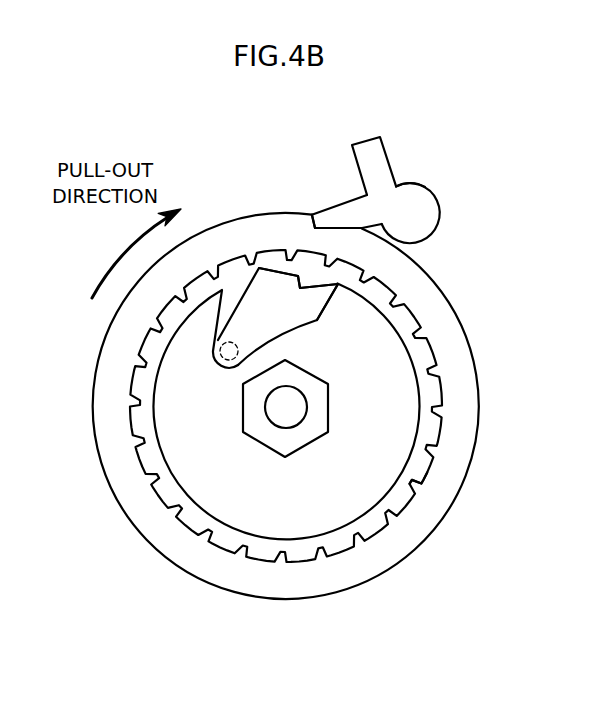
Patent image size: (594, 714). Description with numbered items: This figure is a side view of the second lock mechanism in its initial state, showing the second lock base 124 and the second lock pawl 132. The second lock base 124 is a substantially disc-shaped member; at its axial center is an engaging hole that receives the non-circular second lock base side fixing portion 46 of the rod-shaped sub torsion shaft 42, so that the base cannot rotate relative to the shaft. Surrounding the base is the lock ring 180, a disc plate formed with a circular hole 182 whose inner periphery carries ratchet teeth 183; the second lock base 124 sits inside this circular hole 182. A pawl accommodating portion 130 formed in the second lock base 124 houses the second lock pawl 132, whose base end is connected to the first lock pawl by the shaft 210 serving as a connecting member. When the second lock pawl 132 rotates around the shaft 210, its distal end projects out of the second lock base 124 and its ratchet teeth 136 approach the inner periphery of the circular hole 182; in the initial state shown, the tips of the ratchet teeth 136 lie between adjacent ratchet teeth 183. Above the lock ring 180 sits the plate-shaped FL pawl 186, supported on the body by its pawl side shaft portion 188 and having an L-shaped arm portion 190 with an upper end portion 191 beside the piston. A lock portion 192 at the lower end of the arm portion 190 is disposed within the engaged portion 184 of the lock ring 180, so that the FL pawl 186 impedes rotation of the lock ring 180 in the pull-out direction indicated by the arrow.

The sub torsion shaft 42 is at (340, 407).
The second lock base side fixing portion 46 is at (308, 447).
The second lock base 124 is at (298, 520).
The pawl accommodating portion 130 is at (219, 342).
The second lock pawl 132 is at (320, 308).
The ratchet teeth 136 is at (300, 277).
The lock ring 180 is at (481, 397).
The circular hole 182 is at (431, 440).
The ratchet teeth 183 is at (421, 478).
The engaged portion 184 is at (418, 209).
The FL pawl 186 is at (424, 172).
The pawl side shaft portion 188 is at (417, 227).
The arm portion 190 is at (342, 215).
The upper end portion 191 is at (377, 152).
The lock portion 192 is at (310, 225).
The shaft 210 is at (237, 347).